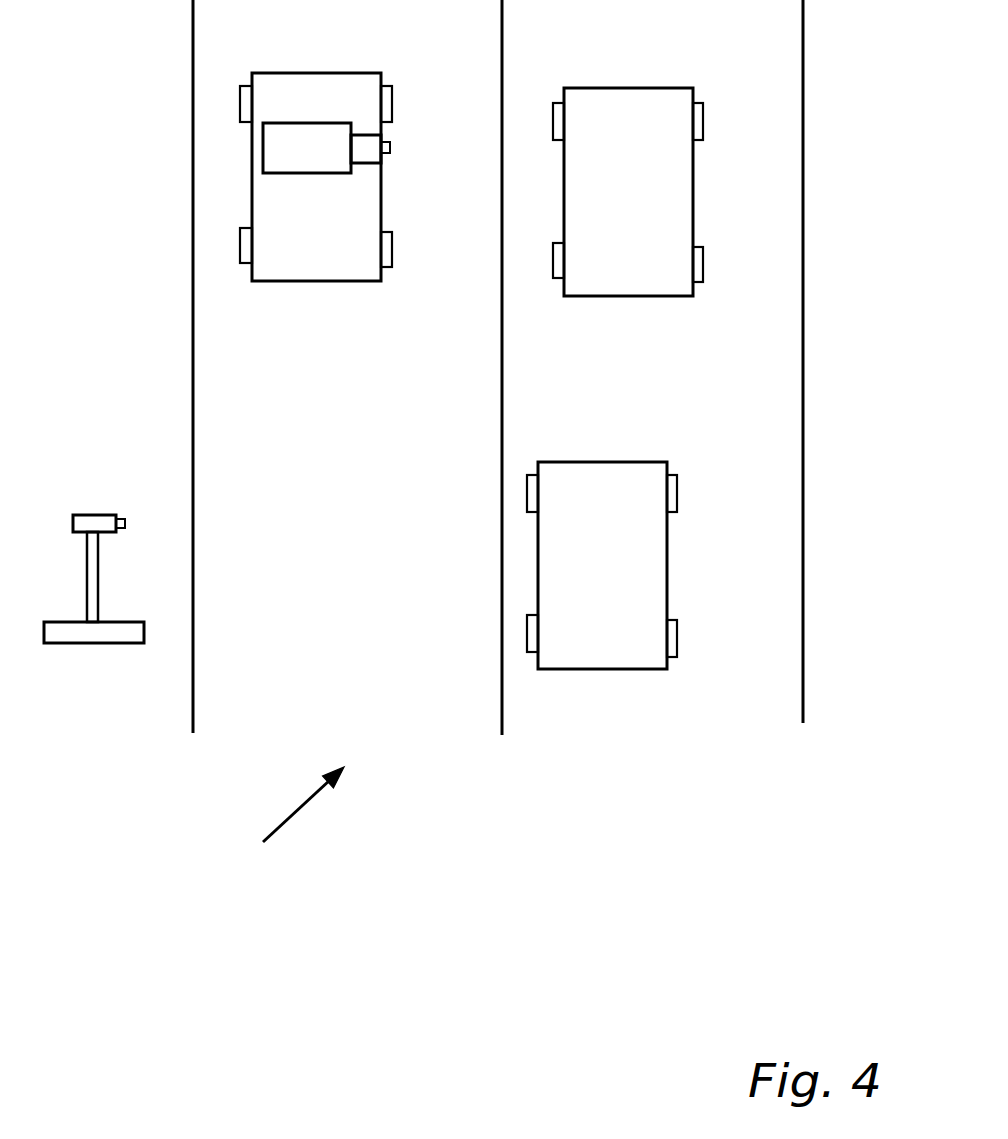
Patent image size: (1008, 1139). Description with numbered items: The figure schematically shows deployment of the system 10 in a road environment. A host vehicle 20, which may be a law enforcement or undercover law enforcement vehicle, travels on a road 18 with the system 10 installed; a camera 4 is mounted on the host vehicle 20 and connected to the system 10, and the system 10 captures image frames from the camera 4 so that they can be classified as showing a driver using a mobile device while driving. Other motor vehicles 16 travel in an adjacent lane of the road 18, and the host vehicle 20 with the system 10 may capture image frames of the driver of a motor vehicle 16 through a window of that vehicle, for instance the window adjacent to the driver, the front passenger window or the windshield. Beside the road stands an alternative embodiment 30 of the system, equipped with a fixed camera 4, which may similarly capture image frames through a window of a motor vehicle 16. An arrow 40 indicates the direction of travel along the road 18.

The camera 4 is at (370, 150).
The system 10 is at (307, 148).
The motor vehicle 16 is at (694, 155).
The road / lane 18 is at (498, 367).
The host vehicle 20 is at (310, 283).
The alternative embodiment of system 30 is at (65, 637).
The direction of travel arrow 40 is at (282, 826).